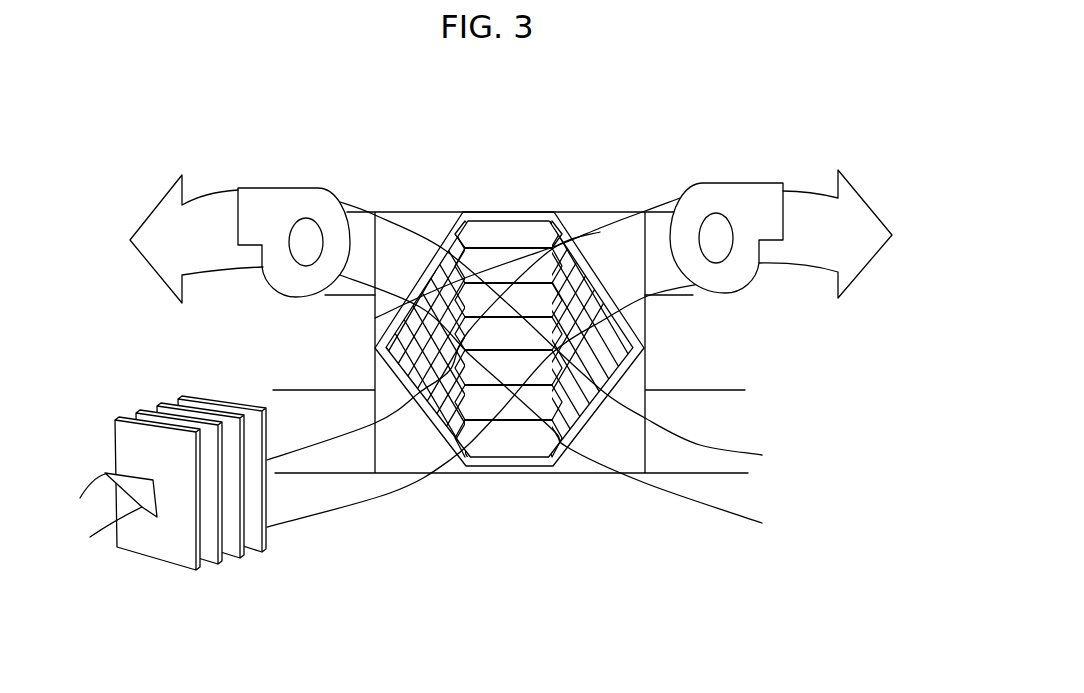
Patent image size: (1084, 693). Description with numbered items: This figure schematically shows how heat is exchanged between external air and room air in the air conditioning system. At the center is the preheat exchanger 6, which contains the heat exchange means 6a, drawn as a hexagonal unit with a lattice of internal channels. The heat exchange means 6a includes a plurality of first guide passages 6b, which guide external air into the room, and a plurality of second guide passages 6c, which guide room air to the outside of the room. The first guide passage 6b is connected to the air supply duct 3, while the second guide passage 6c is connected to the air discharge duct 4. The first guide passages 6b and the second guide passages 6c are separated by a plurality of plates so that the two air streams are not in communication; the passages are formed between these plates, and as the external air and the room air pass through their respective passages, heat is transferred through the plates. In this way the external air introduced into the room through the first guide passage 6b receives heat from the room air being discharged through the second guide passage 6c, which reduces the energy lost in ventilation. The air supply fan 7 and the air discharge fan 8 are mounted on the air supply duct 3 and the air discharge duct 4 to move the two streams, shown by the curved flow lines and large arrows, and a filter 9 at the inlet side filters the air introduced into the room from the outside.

The air supply duct 3 is at (722, 398).
The air discharge duct 4 is at (672, 292).
The preheat exchanger 6 is at (429, 210).
The heat exchange means 6a is at (576, 247).
The first guide passage 6b is at (503, 408).
The second guide passage 6c is at (477, 273).
The air supply fan 7 is at (746, 195).
The air discharge fan 8 is at (274, 200).
The filter 9 is at (163, 556).